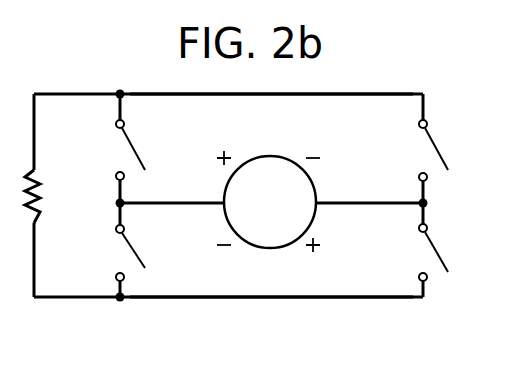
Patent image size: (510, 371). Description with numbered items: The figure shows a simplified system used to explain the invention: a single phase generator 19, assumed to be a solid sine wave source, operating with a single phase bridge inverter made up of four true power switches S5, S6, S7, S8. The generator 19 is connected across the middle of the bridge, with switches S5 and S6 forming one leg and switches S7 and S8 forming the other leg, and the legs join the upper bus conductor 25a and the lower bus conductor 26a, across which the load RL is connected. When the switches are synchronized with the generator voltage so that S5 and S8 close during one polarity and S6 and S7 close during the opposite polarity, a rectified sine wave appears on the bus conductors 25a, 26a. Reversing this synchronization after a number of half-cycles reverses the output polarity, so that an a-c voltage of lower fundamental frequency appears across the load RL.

The single phase generator 19 is at (282, 268).
The bus conductor 25a is at (267, 94).
The bus conductor 26a is at (231, 297).
The load resistor RL is at (40, 175).
The power switch S5 is at (130, 146).
The power switch S6 is at (130, 251).
The power switch S7 is at (433, 146).
The power switch S8 is at (433, 251).